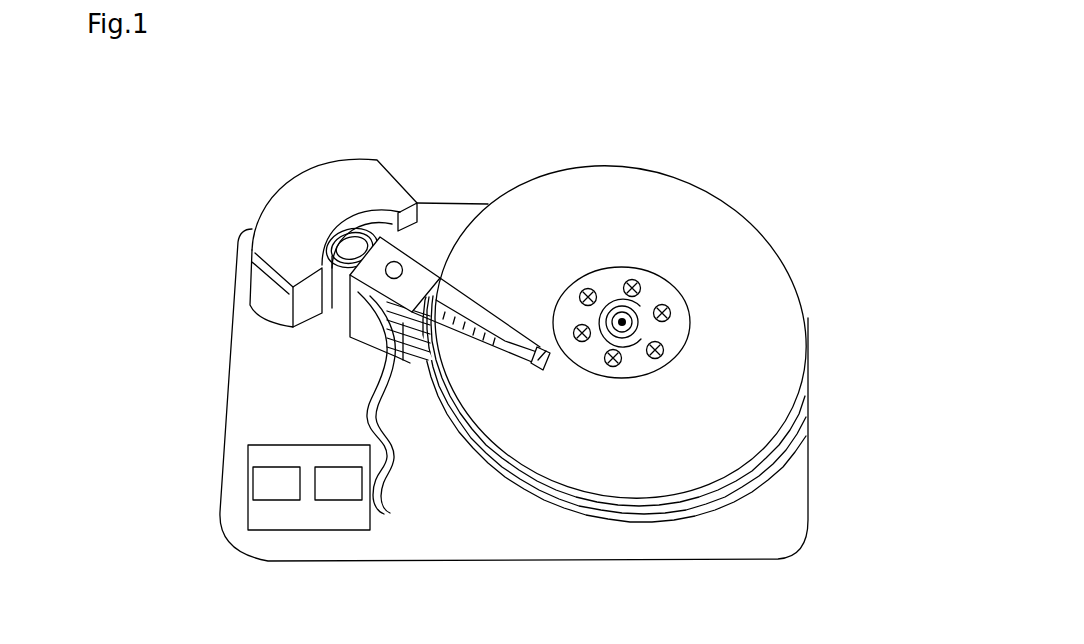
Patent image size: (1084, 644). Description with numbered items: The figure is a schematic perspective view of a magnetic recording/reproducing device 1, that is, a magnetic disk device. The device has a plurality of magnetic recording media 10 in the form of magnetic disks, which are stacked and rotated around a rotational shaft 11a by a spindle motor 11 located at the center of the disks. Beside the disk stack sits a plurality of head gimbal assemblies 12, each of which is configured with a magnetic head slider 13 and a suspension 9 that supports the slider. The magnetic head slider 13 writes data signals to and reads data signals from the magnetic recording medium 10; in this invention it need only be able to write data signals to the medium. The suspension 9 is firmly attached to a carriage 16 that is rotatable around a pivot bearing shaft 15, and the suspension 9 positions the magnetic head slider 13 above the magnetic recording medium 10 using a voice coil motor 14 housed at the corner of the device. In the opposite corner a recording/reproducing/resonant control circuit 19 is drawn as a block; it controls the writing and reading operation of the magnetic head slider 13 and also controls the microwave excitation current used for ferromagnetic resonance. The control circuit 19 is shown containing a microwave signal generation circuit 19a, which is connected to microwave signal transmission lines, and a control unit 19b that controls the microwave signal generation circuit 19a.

The magnetic recording/reproducing device 1 is at (573, 80).
The suspension 9 is at (497, 345).
The magnetic recording medium 10 is at (654, 188).
The spindle motor 11 is at (620, 317).
The rotational shaft 11a is at (626, 320).
The head gimbal assembly 12 is at (588, 445).
The magnetic head slider 13 is at (547, 368).
The voice coil motor 14 is at (350, 163).
The pivot bearing shaft 15 is at (397, 263).
The carriage 16 is at (344, 304).
The recording/reproducing/resonant control circuit 19 is at (290, 517).
The microwave signal generation circuit 19a is at (278, 477).
The control unit 19b is at (338, 477).